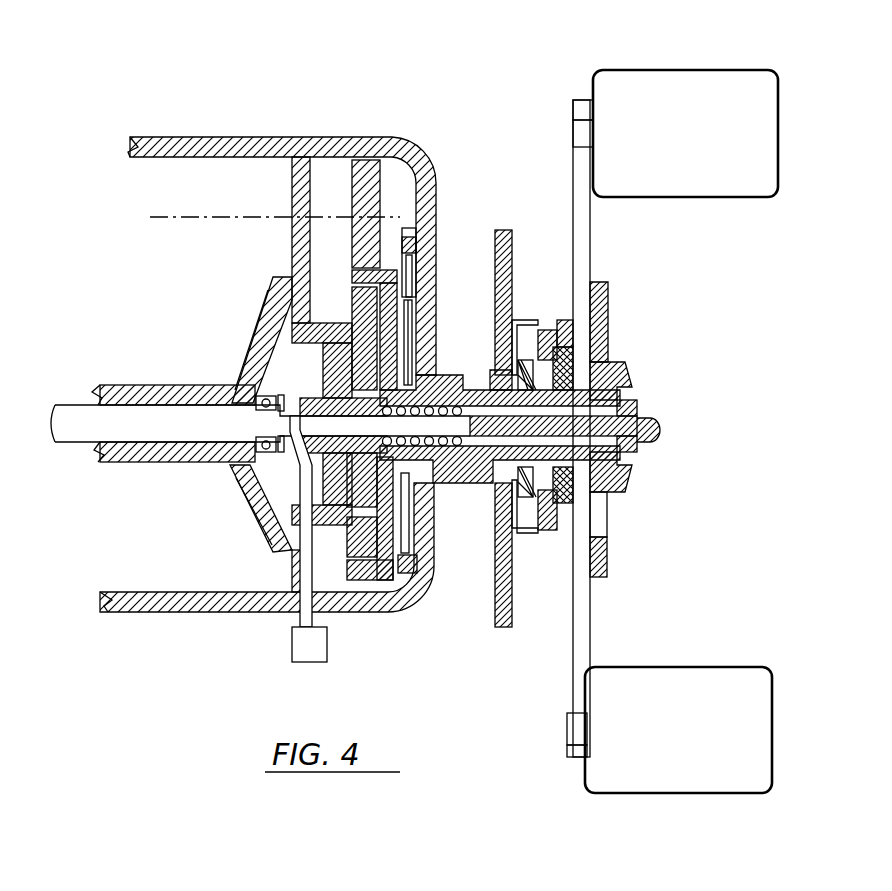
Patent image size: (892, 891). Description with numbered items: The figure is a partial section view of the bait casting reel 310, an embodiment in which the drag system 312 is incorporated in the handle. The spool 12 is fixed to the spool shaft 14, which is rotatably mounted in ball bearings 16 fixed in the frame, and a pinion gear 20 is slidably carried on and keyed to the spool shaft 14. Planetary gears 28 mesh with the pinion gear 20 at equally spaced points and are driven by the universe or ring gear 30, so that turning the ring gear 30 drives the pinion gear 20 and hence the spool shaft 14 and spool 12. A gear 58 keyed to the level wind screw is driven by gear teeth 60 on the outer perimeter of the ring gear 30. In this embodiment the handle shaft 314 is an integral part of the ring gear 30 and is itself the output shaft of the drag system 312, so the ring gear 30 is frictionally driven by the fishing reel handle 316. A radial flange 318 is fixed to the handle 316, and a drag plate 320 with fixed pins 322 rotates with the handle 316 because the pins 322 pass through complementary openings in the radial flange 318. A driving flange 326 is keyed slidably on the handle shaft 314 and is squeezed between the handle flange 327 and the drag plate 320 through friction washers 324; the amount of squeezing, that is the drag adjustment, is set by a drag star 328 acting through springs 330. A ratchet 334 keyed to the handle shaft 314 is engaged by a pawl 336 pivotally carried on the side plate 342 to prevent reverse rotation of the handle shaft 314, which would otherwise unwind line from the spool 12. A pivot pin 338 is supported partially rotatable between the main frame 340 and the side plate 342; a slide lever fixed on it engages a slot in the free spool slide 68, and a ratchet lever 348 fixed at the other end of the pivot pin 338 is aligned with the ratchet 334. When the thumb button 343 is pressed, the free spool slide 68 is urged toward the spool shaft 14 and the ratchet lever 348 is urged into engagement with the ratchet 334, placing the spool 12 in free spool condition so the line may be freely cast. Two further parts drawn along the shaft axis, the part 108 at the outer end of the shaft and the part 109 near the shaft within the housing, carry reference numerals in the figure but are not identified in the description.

The spool 12 is at (122, 452).
The spool shaft 14 is at (147, 428).
The ball bearings 16 is at (222, 460).
The pinion gear 20 is at (323, 403).
The planetary gears 28 is at (362, 317).
The ring gear 30 is at (400, 237).
The gear 58 is at (392, 160).
The gear teeth 60 is at (373, 272).
The free spool slide 68 is at (297, 493).
The shaft end 108 is at (635, 430).
The ball bearing 109 is at (425, 427).
The bait casting reel 310 is at (401, 658).
The drag system 312 is at (652, 523).
The handle shaft 314 is at (490, 493).
The handle 316 is at (575, 617).
The radial flange 318 is at (560, 553).
The drag plate 320 is at (587, 497).
The pins 322 is at (513, 526).
The friction washers 324 is at (610, 323).
The driving flange 326 is at (603, 350).
The handle flange 327 is at (590, 380).
The drag star 328 is at (507, 290).
The springs 330 is at (583, 287).
The ratchet 334 is at (403, 327).
The pawl 336 is at (407, 283).
The pivot pin 338 is at (330, 567).
The main frame 340 is at (277, 603).
The side plate 342 is at (422, 587).
The thumb button 343 is at (308, 643).
The ratchet lever 348 is at (405, 572).